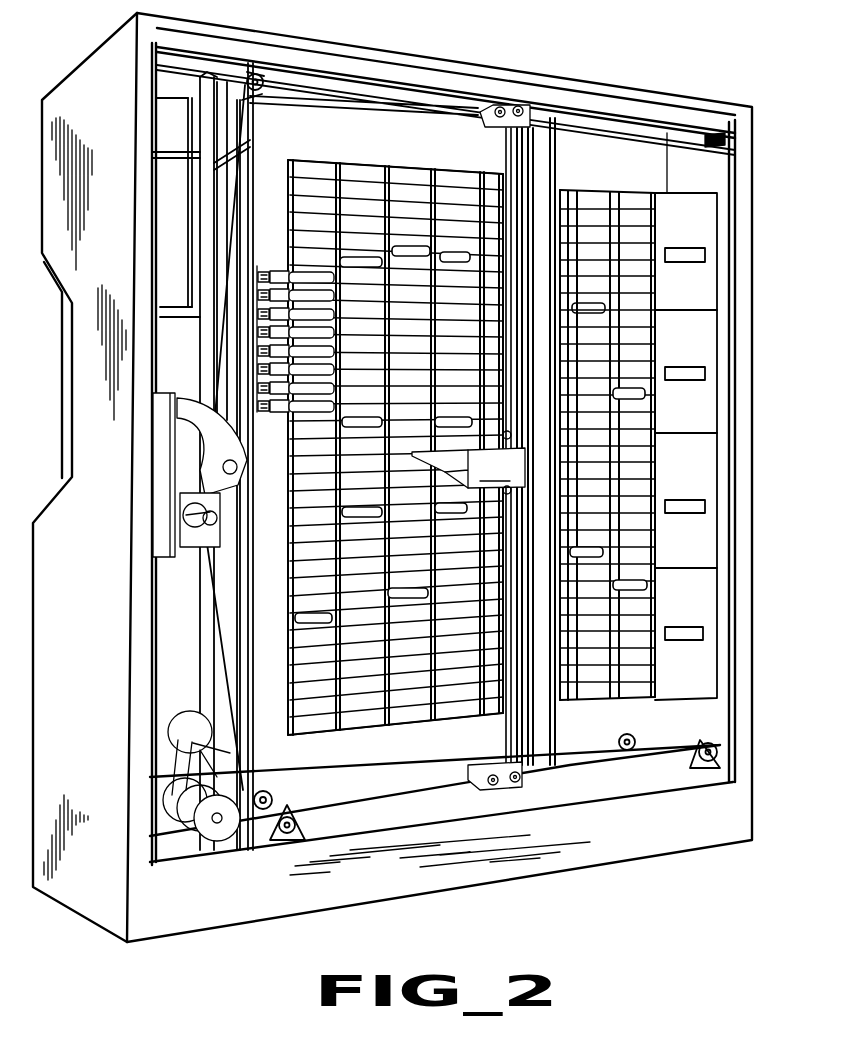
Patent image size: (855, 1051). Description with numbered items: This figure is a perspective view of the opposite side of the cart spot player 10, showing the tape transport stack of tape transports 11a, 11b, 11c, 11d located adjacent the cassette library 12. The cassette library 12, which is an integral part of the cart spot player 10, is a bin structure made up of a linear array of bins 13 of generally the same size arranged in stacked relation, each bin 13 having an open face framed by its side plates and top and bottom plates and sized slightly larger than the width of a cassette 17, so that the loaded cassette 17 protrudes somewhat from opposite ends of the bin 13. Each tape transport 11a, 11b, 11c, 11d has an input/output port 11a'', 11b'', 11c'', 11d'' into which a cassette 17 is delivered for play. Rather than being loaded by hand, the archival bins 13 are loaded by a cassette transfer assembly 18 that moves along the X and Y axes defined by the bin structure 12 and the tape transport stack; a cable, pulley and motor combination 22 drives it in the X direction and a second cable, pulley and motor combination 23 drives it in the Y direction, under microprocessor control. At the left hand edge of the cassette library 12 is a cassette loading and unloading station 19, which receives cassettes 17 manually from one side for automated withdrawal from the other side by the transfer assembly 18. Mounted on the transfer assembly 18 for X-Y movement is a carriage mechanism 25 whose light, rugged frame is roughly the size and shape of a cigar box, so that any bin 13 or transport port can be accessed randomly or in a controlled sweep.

The cart spot player 10 is at (592, 52).
The tape transport 11a is at (721, 251).
The input/output port of tape transport 11a'' is at (686, 229).
The tape transport 11b is at (720, 371).
The input/output port of tape transport 11b'' is at (685, 345).
The tape transport 11c is at (720, 500).
The input/output port of tape transport 11c'' is at (686, 488).
The tape transport 11d is at (720, 634).
The input/output port of tape transport 11d'' is at (687, 618).
The cassette library 12 is at (627, 191).
The bin 13 is at (576, 215).
The cassette 17 is at (357, 260).
The cassette transfer assembly 18 is at (574, 719).
The cassette loading and unloading station 19 is at (257, 350).
The cable, pulley and motor combination for X direction 22 is at (167, 722).
The cable, pulley and motor combination for Y direction 23 is at (190, 462).
The carriage mechanism 25 is at (468, 462).